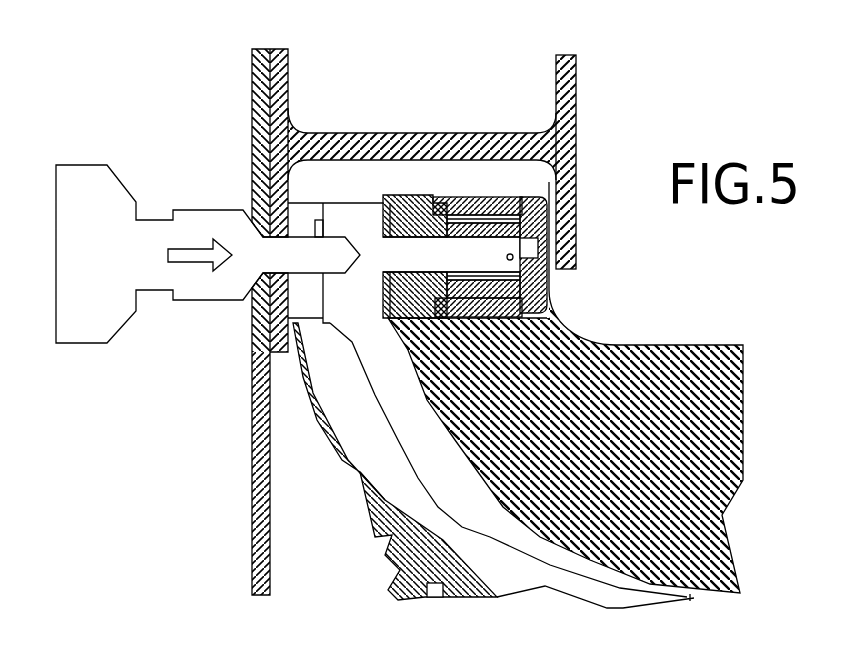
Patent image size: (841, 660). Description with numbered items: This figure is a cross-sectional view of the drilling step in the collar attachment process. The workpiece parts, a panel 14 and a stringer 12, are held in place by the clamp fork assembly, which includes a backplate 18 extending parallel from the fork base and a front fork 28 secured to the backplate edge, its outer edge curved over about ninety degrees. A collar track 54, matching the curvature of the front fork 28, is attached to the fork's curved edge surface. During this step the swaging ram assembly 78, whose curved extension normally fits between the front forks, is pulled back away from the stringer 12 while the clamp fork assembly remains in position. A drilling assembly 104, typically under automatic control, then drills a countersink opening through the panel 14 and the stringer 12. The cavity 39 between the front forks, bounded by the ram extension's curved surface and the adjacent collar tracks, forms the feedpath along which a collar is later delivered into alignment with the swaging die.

The stringer 12 is at (577, 90).
The panel 14 is at (252, 72).
The backplate 18 is at (312, 438).
The front fork 28 is at (719, 350).
The cavity 39 is at (555, 555).
The collar track 54 is at (303, 387).
The swaging ram assembly 78 is at (557, 278).
The drilling assembly 104 is at (197, 196).